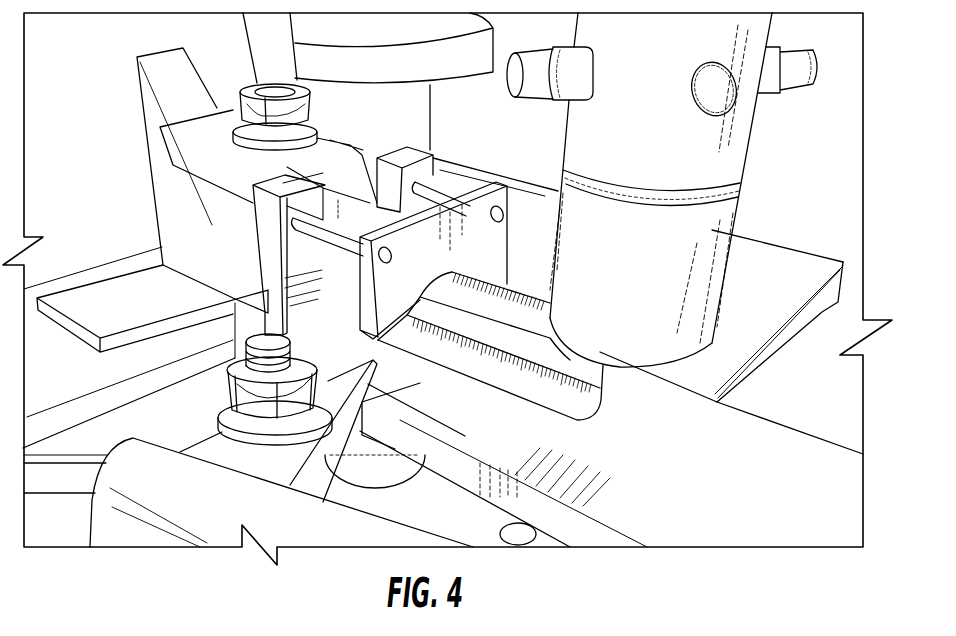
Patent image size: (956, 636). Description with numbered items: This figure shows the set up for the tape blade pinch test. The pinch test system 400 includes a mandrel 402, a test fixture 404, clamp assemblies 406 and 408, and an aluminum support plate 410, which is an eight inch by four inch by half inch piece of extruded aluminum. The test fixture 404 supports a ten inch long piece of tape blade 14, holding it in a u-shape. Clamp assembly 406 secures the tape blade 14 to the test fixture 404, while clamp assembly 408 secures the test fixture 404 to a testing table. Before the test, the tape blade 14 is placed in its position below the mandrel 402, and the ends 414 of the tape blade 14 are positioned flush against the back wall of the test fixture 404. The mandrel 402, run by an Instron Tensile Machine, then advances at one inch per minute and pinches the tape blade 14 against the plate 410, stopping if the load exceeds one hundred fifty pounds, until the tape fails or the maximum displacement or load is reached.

The pinch test system 400 is at (790, 197).
The mandrel 402 is at (676, 273).
The test fixture 404 is at (289, 273).
The clamp assembly 406 is at (229, 181).
The clamp assembly 408 is at (212, 436).
The aluminum support plate 410 is at (735, 457).
The ends of tape blade 414 is at (357, 228).
The tape blade 14 is at (486, 328).